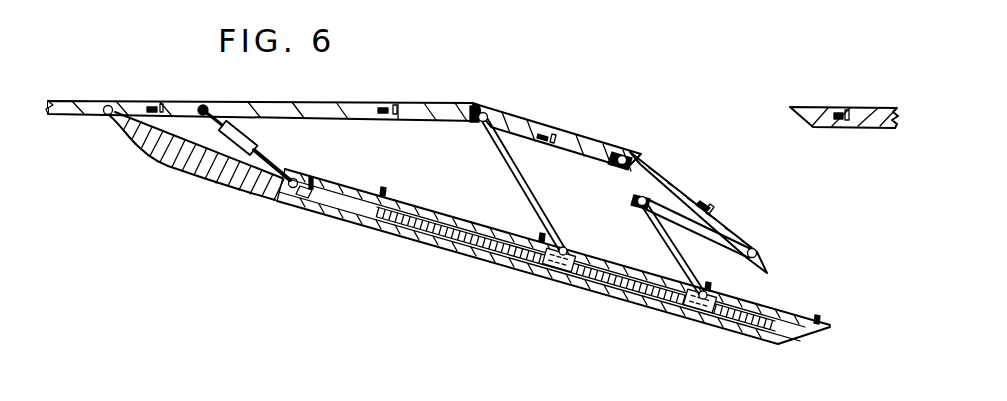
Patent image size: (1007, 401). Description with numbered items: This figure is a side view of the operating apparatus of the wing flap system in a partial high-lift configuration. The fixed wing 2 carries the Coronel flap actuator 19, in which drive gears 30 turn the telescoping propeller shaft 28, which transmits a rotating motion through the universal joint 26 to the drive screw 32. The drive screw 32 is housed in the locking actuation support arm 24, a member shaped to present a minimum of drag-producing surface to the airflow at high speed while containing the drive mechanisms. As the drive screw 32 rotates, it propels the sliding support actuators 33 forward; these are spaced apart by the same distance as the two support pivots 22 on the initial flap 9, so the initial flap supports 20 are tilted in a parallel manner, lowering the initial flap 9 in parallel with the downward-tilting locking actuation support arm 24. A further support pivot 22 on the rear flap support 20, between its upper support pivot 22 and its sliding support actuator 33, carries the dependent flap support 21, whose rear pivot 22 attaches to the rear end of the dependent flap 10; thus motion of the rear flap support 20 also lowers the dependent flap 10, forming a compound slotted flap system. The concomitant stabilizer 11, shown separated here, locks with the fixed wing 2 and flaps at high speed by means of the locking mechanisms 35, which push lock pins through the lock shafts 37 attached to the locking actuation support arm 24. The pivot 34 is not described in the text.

The fixed wing 2 is at (95, 101).
The initial flap 9 is at (558, 120).
The dependent flap 10 is at (700, 207).
The concomitant stabilizer 11 is at (867, 128).
The Coronel flap actuator 19 is at (367, 103).
The initial flap supports 20 is at (490, 173).
The dependent flap support 21 is at (733, 233).
The support pivots 22 is at (483, 112).
The locking actuation support arm 24 is at (365, 215).
The universal joint 26 is at (287, 200).
The telescoping propeller shaft 28 is at (215, 170).
The drive gears 30 is at (200, 105).
The drive screw 32 is at (468, 243).
The sliding support actuators 33 is at (703, 320).
The hinge pin 34 is at (108, 118).
The locking mechanisms 35 is at (403, 107).
The lock shafts 37 is at (385, 187).